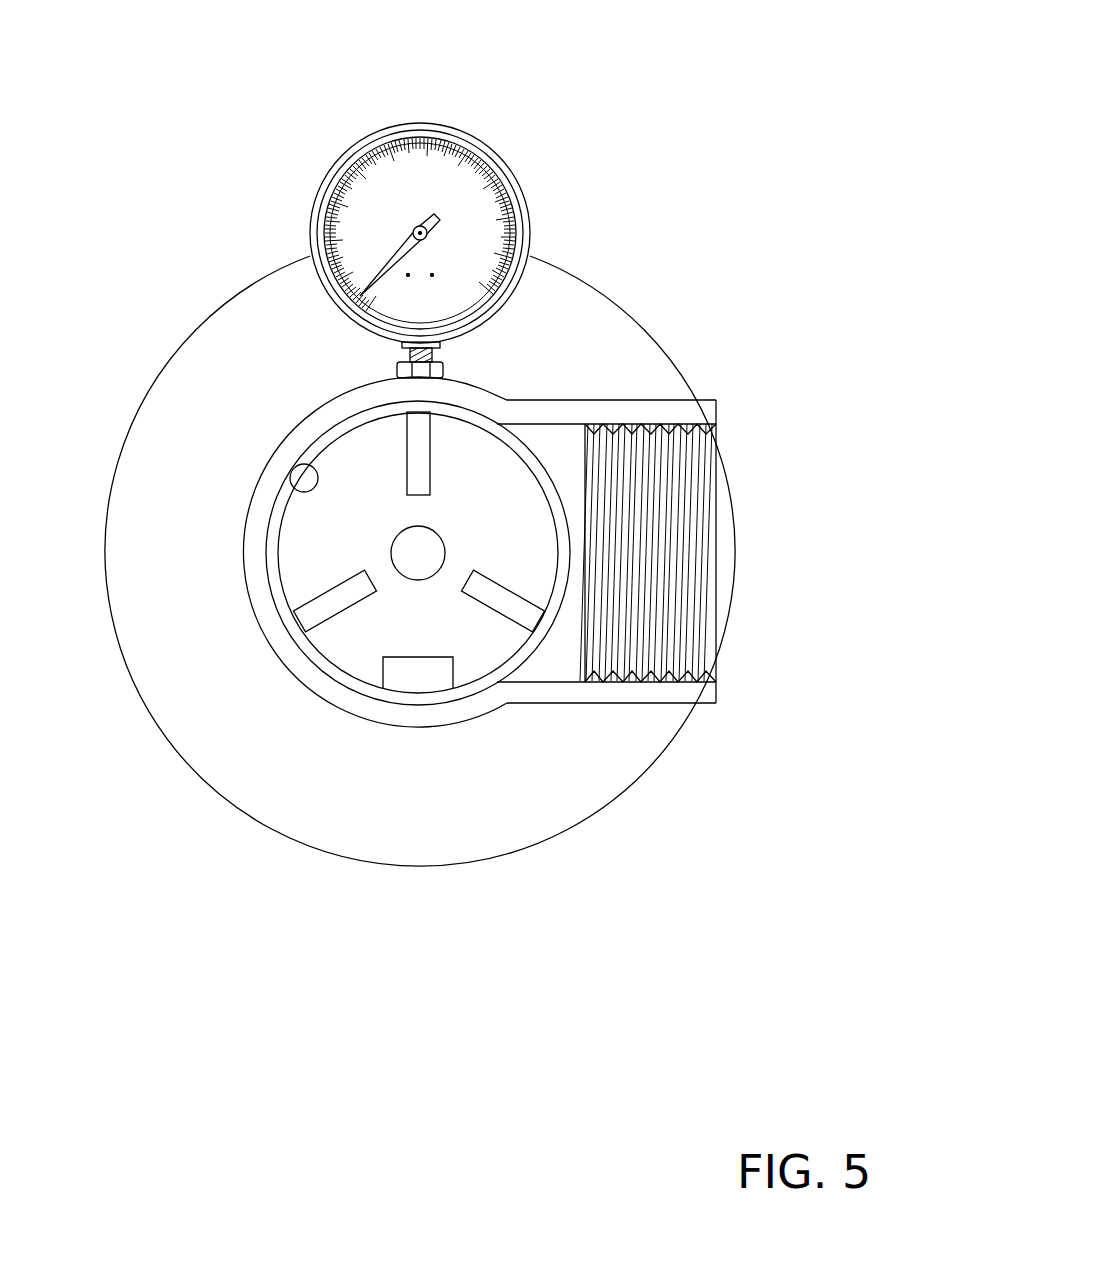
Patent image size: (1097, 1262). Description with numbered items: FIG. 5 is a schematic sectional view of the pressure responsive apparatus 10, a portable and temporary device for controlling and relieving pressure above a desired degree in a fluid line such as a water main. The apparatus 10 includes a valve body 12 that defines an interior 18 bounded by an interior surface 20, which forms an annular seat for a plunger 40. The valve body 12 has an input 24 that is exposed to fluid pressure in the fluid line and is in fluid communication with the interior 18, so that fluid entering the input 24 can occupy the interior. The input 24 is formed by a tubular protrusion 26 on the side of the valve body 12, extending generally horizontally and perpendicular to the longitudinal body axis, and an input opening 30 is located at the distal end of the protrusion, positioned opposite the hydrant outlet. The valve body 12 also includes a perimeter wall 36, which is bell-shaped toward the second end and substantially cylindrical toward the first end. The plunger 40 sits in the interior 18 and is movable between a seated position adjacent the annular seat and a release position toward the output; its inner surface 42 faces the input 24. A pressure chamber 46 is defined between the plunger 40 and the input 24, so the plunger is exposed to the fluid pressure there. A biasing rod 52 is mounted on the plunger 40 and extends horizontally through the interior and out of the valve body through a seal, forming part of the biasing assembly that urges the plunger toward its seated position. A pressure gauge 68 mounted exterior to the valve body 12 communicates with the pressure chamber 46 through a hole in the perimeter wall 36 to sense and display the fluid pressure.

The pressure responsive apparatus 10 is at (623, 88).
The valve body 12 is at (565, 305).
The interior 18 is at (478, 640).
The interior surface 20 is at (290, 481).
The input 24 is at (730, 462).
The tubular protrusion 26 is at (603, 398).
The input opening 30 is at (715, 537).
The perimeter wall 36 is at (348, 700).
The plunger 40 is at (348, 643).
The inner surface 42 is at (300, 570).
The pressure chamber 46 is at (357, 457).
The biasing rod 52 is at (408, 552).
The pressure gauge 68 is at (513, 170).